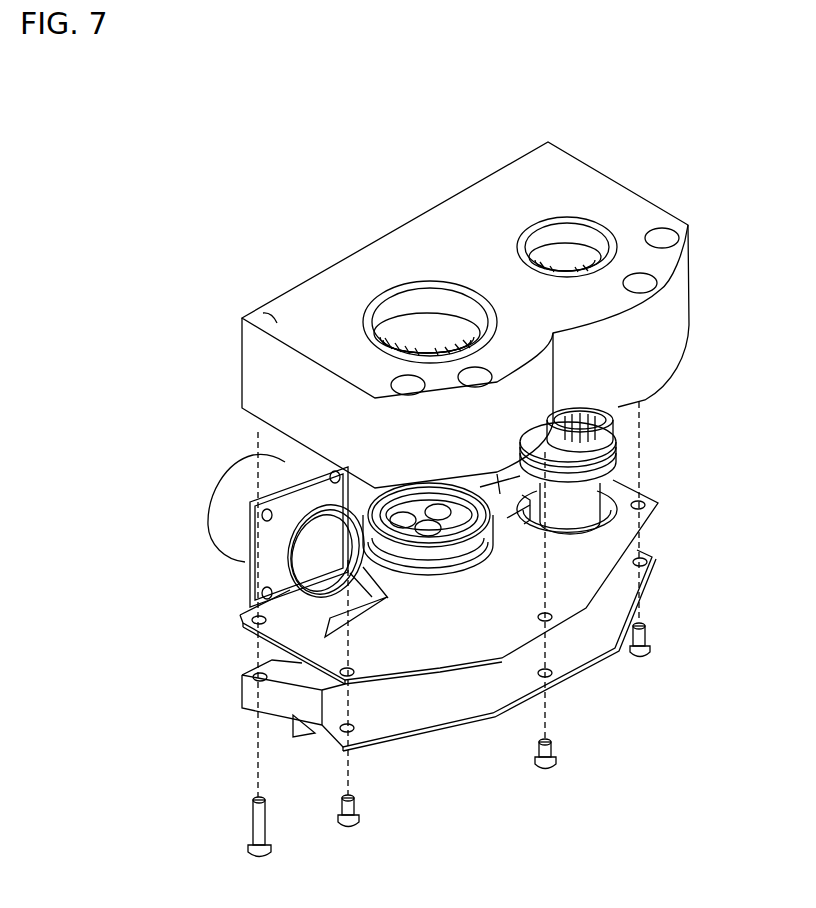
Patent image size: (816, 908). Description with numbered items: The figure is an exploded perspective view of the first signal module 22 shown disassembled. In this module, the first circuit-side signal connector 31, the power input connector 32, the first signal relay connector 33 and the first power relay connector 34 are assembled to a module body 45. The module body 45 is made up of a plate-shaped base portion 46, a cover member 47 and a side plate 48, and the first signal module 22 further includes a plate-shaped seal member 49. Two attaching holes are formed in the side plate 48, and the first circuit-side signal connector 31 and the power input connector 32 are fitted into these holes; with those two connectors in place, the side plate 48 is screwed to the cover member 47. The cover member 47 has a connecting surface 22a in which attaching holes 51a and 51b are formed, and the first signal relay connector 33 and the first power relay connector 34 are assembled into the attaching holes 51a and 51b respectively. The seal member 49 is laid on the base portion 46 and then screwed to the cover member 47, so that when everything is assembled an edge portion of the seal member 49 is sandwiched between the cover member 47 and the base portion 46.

The first signal module 22 is at (278, 275).
The connecting surface 22a is at (262, 307).
The module body 45 is at (571, 139).
The cover member 47 is at (683, 276).
The attaching hole 51a is at (542, 236).
The attaching hole 51b is at (370, 308).
The first signal relay connector 33 is at (608, 427).
The first power relay connector 34 is at (440, 588).
The power input connector 32 is at (209, 524).
The side plate 48 is at (250, 583).
The first circuit-side signal connector 31 is at (508, 517).
The seal member 49 is at (660, 516).
The base portion 46 is at (588, 663).